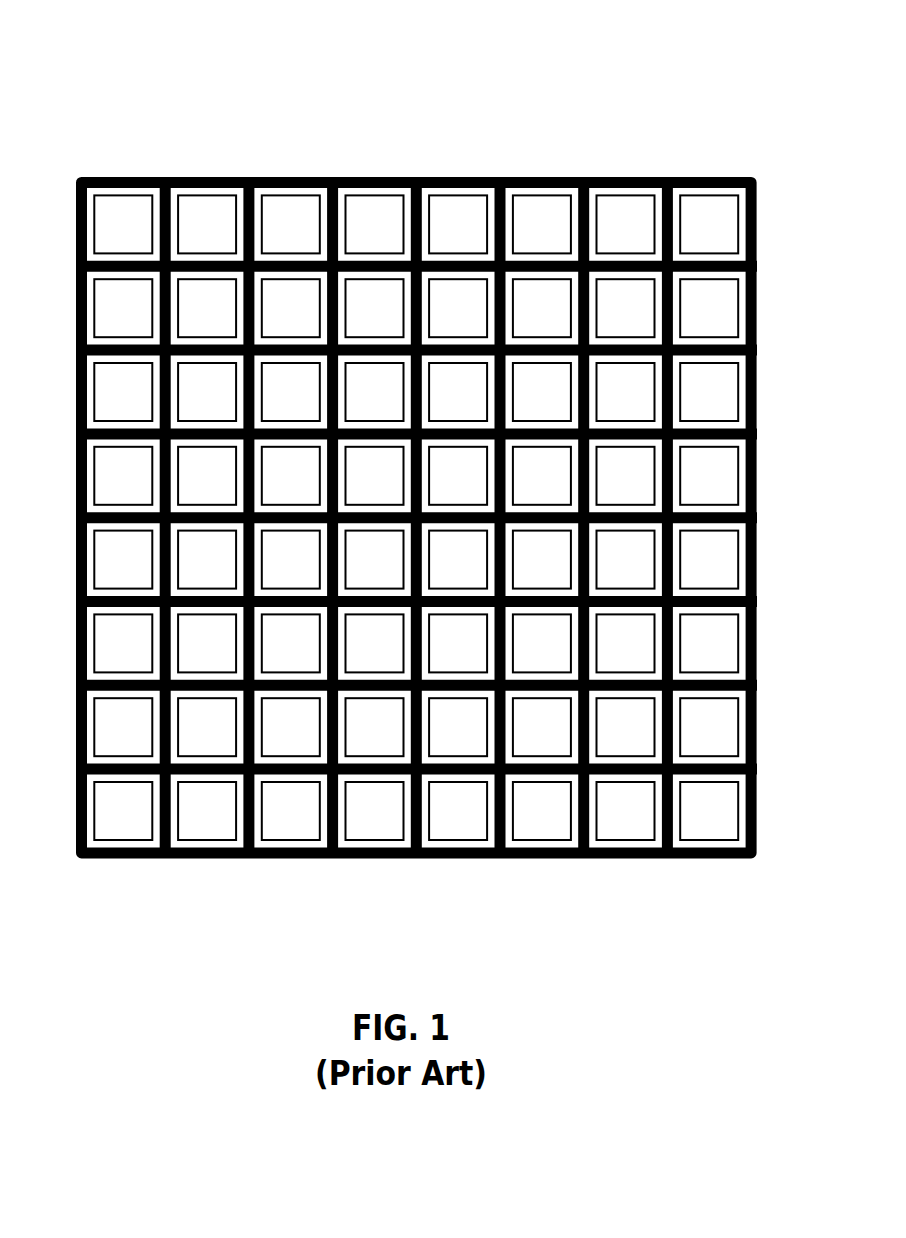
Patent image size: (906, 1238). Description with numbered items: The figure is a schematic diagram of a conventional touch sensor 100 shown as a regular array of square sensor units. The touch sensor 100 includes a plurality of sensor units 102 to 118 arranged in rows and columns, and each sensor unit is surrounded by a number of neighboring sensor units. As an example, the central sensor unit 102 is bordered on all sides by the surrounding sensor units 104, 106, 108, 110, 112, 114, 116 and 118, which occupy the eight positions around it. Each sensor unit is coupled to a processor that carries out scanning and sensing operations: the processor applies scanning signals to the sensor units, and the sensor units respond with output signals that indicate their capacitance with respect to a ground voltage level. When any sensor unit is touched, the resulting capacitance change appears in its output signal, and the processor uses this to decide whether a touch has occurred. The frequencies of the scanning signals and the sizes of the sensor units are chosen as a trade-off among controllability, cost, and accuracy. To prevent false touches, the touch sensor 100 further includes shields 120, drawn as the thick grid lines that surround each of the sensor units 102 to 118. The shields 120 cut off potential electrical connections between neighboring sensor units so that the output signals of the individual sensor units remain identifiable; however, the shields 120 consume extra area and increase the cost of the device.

The touch sensor 100 is at (147, 126).
The sensor unit 102 is at (375, 476).
The sensor unit 104 is at (291, 392).
The sensor unit 106 is at (375, 392).
The sensor unit 108 is at (458, 392).
The sensor unit 110 is at (291, 476).
The sensor unit 112 is at (458, 476).
The sensor unit 114 is at (291, 560).
The sensor unit 116 is at (375, 560).
The sensor unit 118 is at (458, 560).
The shields 120 is at (500, 178).